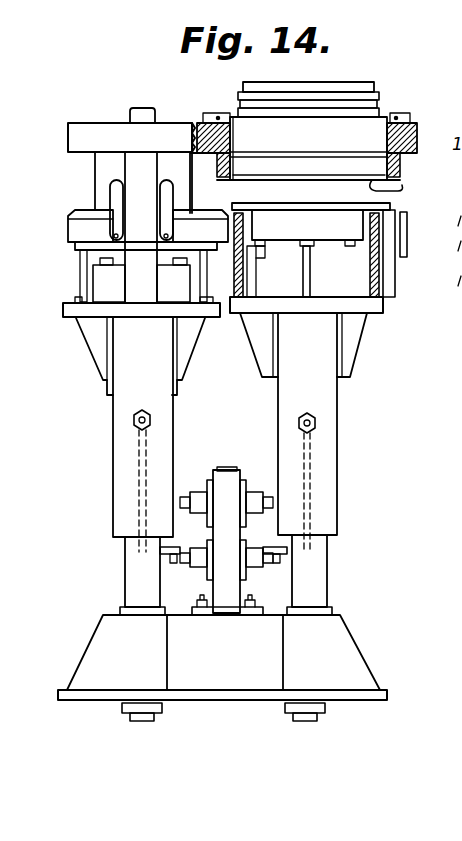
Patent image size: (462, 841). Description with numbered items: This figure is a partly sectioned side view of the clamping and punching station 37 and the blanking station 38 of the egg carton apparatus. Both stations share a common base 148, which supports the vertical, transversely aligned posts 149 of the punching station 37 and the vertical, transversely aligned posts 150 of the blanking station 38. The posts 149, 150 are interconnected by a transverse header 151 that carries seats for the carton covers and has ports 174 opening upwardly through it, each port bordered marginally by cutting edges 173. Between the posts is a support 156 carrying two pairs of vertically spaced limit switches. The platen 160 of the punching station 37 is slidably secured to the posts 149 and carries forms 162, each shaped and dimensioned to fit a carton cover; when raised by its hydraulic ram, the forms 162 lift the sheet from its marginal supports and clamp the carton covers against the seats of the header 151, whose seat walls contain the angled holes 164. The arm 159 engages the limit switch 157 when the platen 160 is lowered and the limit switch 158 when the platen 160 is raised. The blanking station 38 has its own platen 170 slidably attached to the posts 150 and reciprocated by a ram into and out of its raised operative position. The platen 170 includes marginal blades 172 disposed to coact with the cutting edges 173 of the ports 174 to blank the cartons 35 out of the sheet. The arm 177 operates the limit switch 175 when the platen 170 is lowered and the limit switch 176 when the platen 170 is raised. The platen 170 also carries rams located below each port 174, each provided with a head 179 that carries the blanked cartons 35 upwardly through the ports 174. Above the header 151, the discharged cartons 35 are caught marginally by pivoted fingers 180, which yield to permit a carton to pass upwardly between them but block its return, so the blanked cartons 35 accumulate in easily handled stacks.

The egg carton 35 is at (346, 84).
The clamping and punching station 37 is at (91, 121).
The blanking station 38 is at (419, 127).
The common base 148 is at (370, 660).
The posts of the punching station 149 is at (125, 565).
The posts of the blanking station 150 is at (320, 594).
The transverse header 151 is at (176, 122).
The support 156 is at (228, 613).
The limit switch 157 is at (205, 562).
The limit switch 158 is at (188, 492).
The arm 159 is at (182, 560).
The platen 160 is at (80, 310).
The form 162 is at (80, 228).
The hole 164 is at (163, 192).
The platen 170 is at (360, 305).
The marginal blade 172 is at (383, 213).
The cutting edge 173 is at (385, 184).
The port 174 is at (355, 152).
The limit switch 175 is at (249, 566).
The limit switch 176 is at (266, 492).
The arm 177 is at (275, 567).
The head 179 is at (307, 253).
The pivoted finger 180 is at (228, 112).